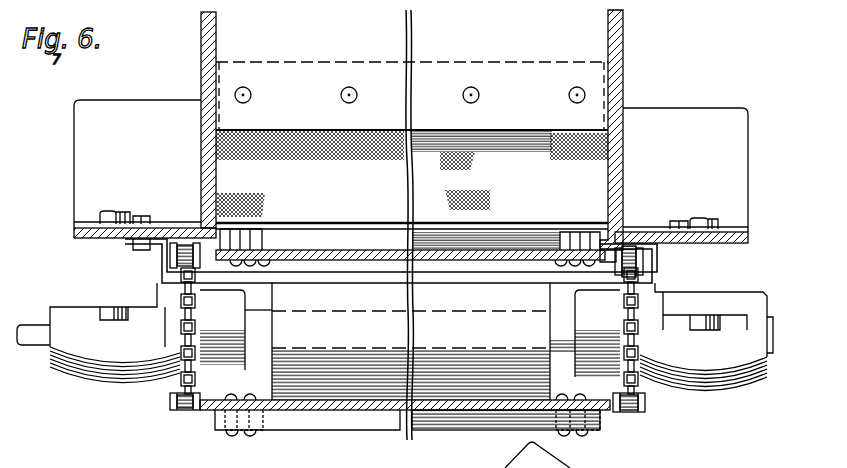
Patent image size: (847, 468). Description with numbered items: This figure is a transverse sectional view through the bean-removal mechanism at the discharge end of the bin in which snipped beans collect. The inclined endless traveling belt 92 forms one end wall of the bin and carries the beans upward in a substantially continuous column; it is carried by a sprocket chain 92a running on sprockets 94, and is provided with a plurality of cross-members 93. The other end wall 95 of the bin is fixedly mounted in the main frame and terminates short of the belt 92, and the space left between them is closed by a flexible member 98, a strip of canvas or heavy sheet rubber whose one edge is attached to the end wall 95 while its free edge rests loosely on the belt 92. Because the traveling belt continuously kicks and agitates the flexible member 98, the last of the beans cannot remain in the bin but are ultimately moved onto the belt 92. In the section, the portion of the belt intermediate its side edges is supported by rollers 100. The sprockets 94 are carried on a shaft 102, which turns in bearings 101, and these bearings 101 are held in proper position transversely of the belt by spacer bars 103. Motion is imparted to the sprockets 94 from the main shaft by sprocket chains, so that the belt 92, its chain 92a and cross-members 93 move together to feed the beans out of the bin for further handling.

The inclined endless traveling belt 92 is at (346, 410).
The sprocket chain 92a is at (180, 410).
The cross-members 93 is at (486, 238).
The sprockets 94 is at (184, 368).
The end wall 95 is at (592, 60).
The flexible member 98 is at (560, 231).
The rollers 100 is at (411, 341).
The bearings 101 is at (395, 337).
The shaft 102 is at (552, 331).
The spacer bars 103 is at (466, 287).